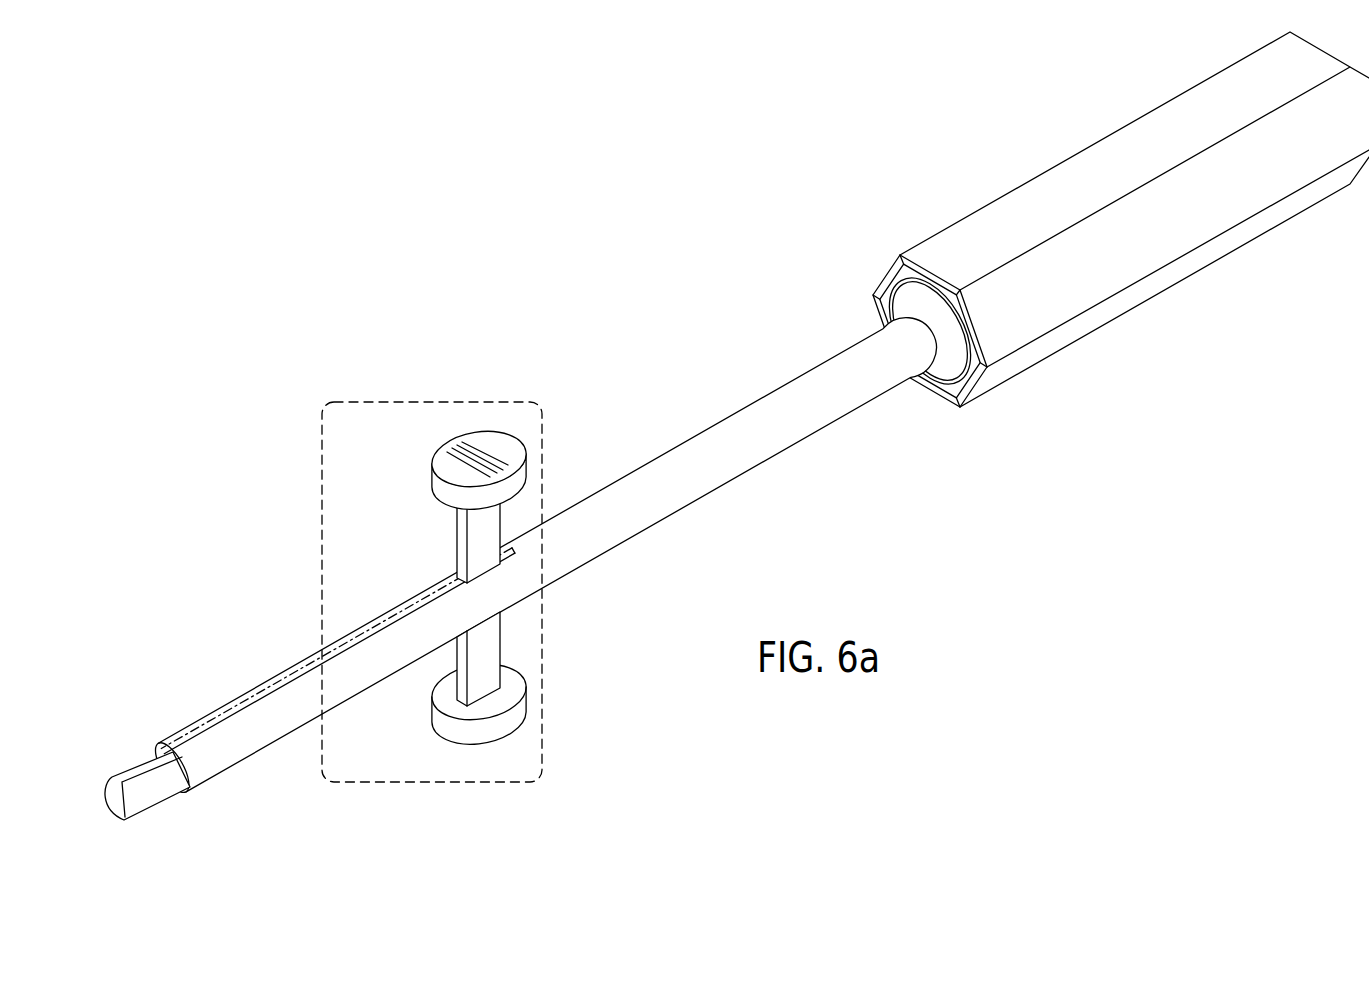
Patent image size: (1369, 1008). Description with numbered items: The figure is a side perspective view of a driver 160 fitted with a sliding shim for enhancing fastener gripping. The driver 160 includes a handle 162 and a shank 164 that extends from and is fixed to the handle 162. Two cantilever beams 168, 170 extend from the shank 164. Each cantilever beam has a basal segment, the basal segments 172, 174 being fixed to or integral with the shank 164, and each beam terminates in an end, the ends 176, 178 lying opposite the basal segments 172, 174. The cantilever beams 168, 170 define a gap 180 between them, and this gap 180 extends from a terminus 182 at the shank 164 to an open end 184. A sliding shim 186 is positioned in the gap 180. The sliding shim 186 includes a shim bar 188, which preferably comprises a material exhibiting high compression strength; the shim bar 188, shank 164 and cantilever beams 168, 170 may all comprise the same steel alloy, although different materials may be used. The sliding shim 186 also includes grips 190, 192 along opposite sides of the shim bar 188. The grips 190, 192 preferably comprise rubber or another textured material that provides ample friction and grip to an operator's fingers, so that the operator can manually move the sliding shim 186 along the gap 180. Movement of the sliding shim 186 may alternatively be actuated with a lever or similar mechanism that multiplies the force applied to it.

The driver 160 is at (578, 218).
The handle 162 is at (1052, 182).
The shank 164 is at (721, 410).
The cantilever beam 168 is at (293, 722).
The cantilever beam 170 is at (258, 664).
The basal segment 172 is at (542, 580).
The basal segment 174 is at (518, 524).
The end 176 is at (134, 840).
The end 178 is at (109, 754).
The gap 180 is at (354, 624).
The terminus 182 is at (505, 549).
The open end 184 is at (106, 827).
The sliding shim 186 is at (417, 447).
The shim bar 188 is at (456, 551).
The grip 190 is at (505, 430).
The grip 192 is at (515, 730).